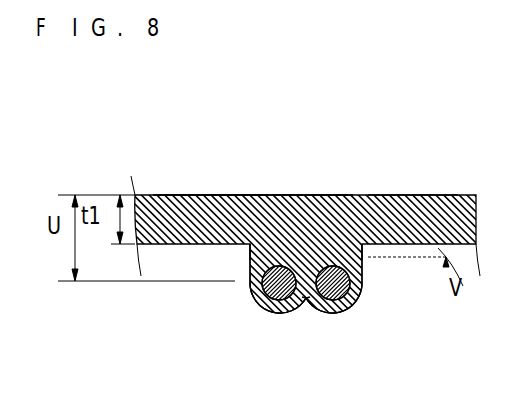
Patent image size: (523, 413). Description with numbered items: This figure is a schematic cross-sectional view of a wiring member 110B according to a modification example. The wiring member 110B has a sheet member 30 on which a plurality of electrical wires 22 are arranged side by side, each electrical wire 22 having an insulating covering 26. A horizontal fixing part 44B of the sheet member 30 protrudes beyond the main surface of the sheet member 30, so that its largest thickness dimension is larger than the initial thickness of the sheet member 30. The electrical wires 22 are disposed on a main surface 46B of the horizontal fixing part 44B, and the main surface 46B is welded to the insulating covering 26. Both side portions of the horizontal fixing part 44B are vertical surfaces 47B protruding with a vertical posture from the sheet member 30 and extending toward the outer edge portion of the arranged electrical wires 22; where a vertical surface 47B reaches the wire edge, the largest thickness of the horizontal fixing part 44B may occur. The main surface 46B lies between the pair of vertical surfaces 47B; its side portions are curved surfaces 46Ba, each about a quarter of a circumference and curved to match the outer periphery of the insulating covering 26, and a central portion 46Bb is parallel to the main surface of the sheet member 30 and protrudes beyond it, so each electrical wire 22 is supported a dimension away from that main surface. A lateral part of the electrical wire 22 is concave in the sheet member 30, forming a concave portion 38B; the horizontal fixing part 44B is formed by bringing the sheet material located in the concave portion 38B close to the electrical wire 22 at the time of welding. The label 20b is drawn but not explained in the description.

The wiring member 110B is at (301, 223).
The sheet member 30 is at (301, 215).
The concave portion 38B is at (301, 167).
The main surface 46B is at (253, 127).
The curved surface 46Ba is at (251, 148).
The central portion 46Bb is at (260, 148).
The vertical surface 47B is at (289, 264).
The horizontal fixing part 44B is at (259, 278).
The insulating covering 26 is at (301, 309).
The electrical wire 22 is at (306, 311).
The bottom portion 20b is at (297, 342).